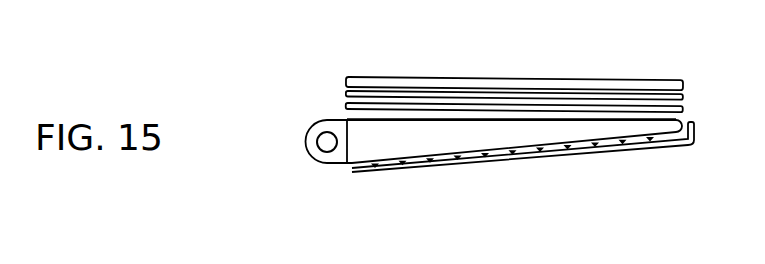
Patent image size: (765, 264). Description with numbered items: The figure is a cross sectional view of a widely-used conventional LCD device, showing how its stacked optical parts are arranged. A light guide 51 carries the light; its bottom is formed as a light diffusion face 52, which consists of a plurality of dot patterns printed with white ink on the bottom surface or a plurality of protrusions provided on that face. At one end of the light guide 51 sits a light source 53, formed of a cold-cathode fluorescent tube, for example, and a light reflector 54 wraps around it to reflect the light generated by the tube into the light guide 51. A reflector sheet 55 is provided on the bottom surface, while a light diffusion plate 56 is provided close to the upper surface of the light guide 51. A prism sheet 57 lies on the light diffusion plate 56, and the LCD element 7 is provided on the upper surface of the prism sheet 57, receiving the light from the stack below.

The LCD element 7 is at (475, 79).
The light guide 51 is at (365, 148).
The light diffusion face 52 is at (433, 156).
The light source 53 is at (324, 146).
The light reflector 54 is at (317, 119).
The reflector sheet 55 is at (547, 151).
The light diffusion plate 56 is at (642, 107).
The prism sheet 57 is at (599, 101).